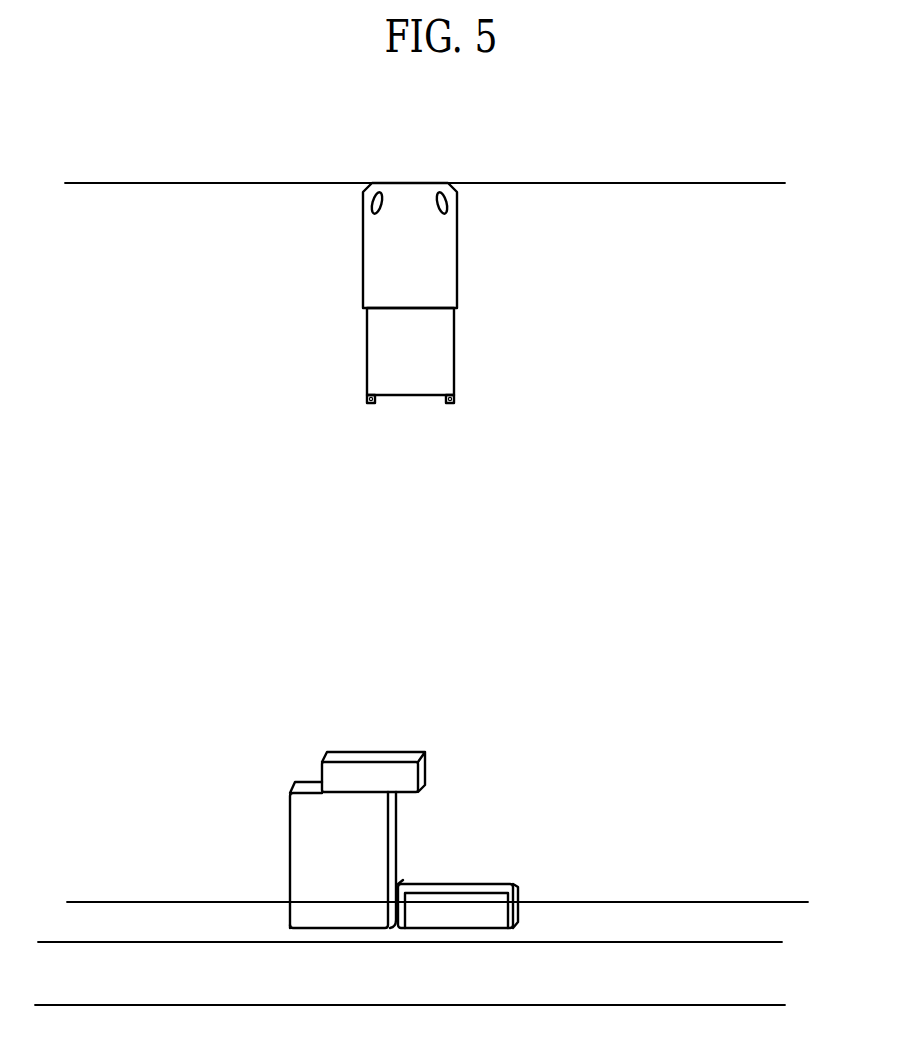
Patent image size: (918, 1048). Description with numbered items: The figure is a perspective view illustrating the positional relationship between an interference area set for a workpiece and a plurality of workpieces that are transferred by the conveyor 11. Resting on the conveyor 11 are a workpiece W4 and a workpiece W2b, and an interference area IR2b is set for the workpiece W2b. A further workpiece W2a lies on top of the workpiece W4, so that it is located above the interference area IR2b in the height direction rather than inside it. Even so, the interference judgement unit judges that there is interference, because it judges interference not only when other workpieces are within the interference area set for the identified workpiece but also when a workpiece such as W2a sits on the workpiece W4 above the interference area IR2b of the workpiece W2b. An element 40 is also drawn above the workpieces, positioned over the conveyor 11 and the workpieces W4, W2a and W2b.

The transfer robot / hand unit 40 is at (457, 355).
The workpiece W4 is at (290, 833).
The workpiece W2a is at (375, 757).
The workpiece W2b is at (487, 888).
The interference area IR2b is at (403, 883).
The conveyor 11 is at (673, 918).